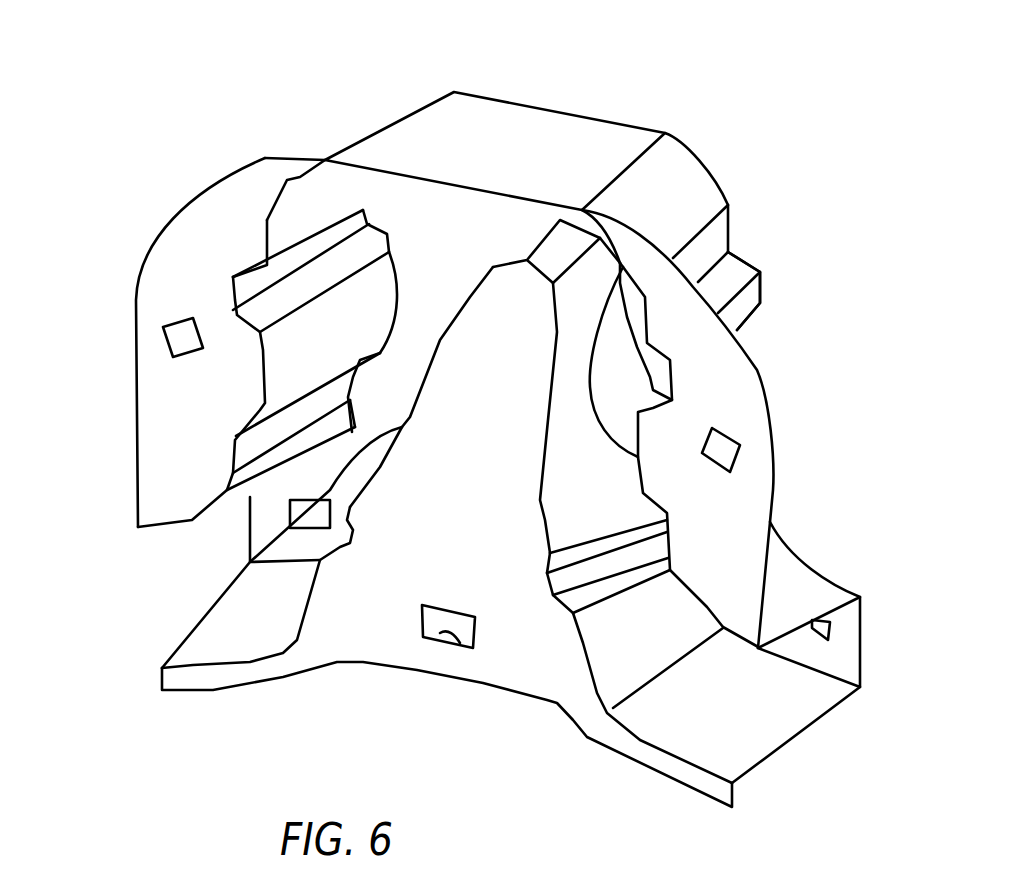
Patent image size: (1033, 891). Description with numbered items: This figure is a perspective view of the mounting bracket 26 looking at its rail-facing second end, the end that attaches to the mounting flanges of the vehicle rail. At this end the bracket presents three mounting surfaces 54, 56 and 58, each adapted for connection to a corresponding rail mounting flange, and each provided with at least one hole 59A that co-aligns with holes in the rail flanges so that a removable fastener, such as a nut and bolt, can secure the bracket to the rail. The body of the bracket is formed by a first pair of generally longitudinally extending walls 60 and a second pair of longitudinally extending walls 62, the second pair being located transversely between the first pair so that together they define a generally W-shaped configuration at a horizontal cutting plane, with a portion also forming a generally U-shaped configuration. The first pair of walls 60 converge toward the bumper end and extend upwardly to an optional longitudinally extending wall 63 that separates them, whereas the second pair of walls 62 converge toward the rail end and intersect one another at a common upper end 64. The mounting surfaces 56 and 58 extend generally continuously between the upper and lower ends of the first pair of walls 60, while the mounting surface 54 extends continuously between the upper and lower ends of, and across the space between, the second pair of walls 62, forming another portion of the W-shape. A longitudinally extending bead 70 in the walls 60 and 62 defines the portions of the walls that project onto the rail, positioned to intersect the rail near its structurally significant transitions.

The mounting bracket 26 is at (156, 156).
The mounting surface 54 is at (383, 627).
The mounting surface 56 is at (168, 403).
The mounting surface 58 is at (730, 490).
The hole 59A is at (163, 327).
The first pair of generally longitudinally extending walls 60 is at (315, 340).
The second pair of longitudinally extending walls 62 is at (255, 575).
The longitudinally extending wall 63 is at (463, 147).
The common upper end 64 is at (532, 237).
The longitudinally extending bead 70 is at (750, 293).